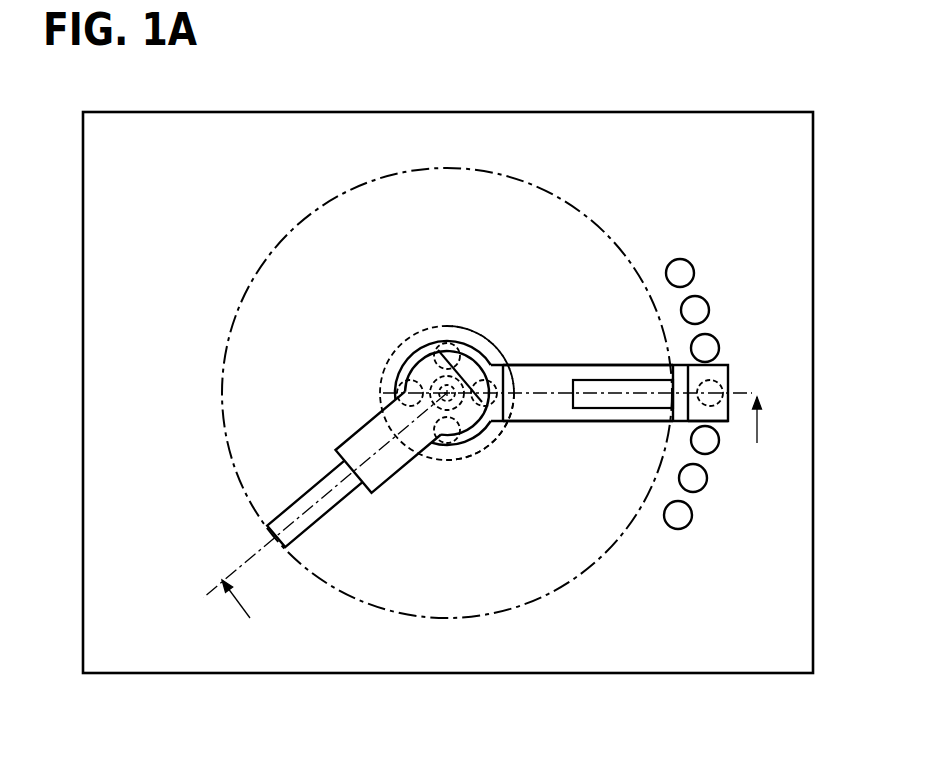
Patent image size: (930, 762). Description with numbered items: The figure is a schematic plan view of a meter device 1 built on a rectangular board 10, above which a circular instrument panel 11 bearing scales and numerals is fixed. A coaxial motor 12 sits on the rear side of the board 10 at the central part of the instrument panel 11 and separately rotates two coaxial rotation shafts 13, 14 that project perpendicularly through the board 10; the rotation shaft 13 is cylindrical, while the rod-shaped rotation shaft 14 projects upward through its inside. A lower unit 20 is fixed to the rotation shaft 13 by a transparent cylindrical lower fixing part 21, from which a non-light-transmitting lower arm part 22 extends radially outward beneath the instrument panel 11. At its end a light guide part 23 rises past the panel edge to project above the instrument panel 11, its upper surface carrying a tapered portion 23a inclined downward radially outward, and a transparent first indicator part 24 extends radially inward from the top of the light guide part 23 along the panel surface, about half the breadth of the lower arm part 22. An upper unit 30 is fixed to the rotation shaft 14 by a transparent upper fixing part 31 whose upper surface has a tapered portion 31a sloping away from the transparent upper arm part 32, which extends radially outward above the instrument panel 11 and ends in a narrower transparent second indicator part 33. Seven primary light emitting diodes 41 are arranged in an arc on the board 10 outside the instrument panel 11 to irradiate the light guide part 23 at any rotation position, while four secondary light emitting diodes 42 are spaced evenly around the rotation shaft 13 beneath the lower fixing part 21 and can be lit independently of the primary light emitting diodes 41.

The meter device 1 is at (448, 422).
The board 10 is at (544, 674).
The instrument panel 11 is at (586, 574).
The coaxial motor 12 is at (463, 329).
The rotation shaft 13 is at (505, 357).
The rotation shaft 14 is at (492, 443).
The lower unit 20 is at (643, 401).
The lower fixing part 21 is at (432, 343).
The lower arm part 22 is at (600, 364).
The light guide part 23 is at (702, 411).
The tapered portion 23a is at (688, 421).
The first indicator part 24 is at (605, 409).
The upper unit 30 is at (354, 463).
The upper fixing part 31 is at (404, 368).
The tapered portion 31a is at (476, 376).
The upper arm part 32 is at (368, 422).
The second indicator part 33 is at (330, 509).
The primary light emitting diodes 41 is at (693, 270).
The secondary light emitting diodes 42 is at (460, 351).